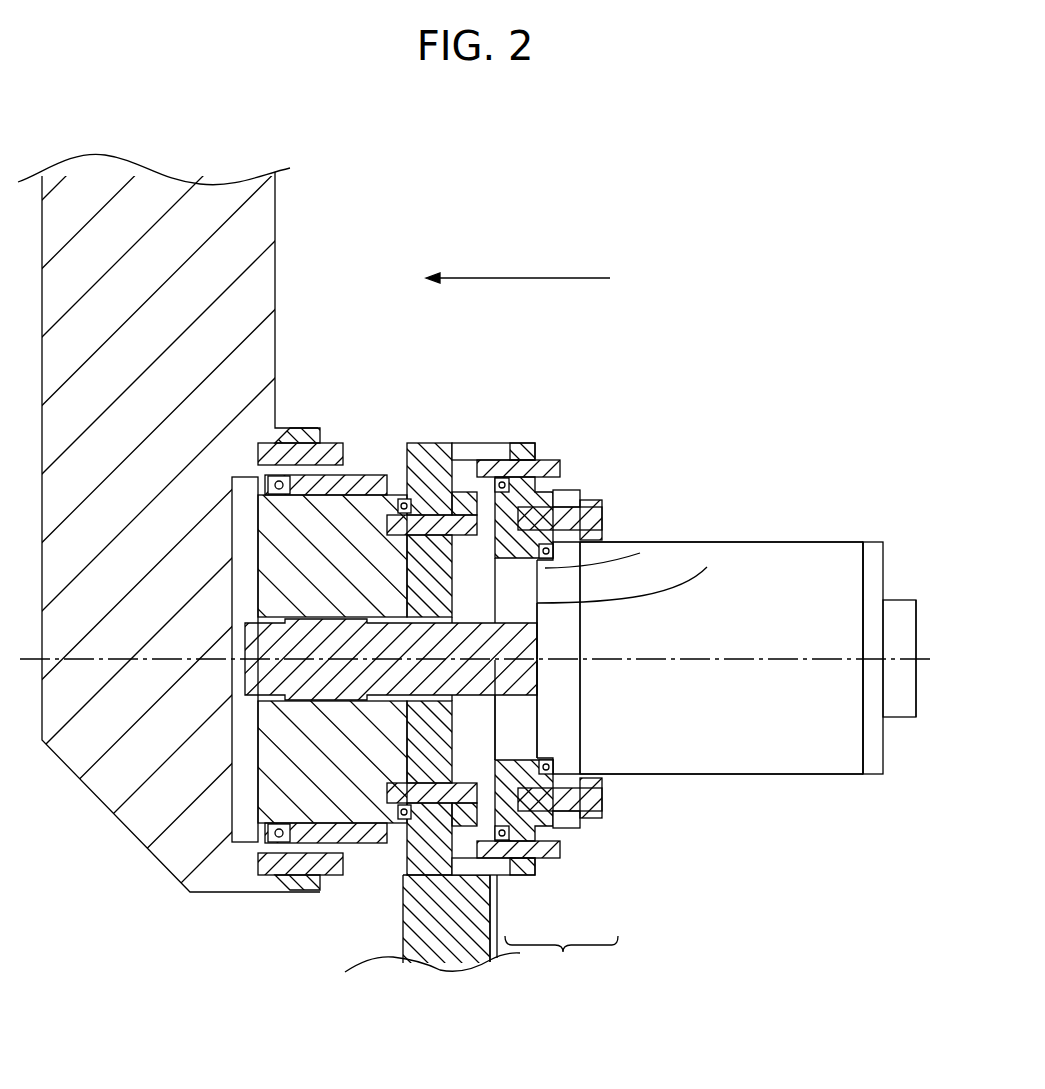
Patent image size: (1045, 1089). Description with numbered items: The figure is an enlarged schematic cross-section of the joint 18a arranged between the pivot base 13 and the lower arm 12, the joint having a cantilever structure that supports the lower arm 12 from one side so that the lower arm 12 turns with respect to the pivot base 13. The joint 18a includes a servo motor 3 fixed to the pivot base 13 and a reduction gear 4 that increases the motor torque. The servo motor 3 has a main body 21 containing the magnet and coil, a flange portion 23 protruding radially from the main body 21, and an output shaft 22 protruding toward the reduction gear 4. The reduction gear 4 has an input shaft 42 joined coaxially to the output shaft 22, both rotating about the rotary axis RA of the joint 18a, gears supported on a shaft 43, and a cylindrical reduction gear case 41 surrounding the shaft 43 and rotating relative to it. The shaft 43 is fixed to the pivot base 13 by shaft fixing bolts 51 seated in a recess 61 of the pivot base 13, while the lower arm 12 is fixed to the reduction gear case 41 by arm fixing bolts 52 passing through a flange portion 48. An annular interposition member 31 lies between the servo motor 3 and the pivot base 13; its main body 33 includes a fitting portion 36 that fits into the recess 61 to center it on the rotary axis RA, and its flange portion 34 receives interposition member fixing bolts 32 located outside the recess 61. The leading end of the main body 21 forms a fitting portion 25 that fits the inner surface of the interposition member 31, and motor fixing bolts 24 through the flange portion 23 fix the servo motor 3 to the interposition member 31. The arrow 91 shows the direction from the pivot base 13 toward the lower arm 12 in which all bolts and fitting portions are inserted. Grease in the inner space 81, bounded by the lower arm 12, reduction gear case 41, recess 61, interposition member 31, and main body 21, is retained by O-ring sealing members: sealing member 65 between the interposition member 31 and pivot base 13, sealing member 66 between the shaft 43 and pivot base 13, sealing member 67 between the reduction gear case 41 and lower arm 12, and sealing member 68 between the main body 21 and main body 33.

The lower arm 12 is at (75, 472).
The pivot base 13 is at (448, 960).
The joint 18a is at (681, 408).
The main body 21 is at (823, 560).
The output shaft 22 is at (537, 667).
The flange portion 23 is at (585, 490).
The motor fixing bolts 24 is at (605, 500).
The fitting portion 25 is at (640, 553).
The servo motor 3 is at (850, 530).
The interposition member 31 is at (527, 443).
The interposition member fixing bolts 32 is at (545, 458).
The main body 33 is at (560, 858).
The flange portion 34 is at (513, 877).
The fitting portion 36 is at (533, 860).
The reduction gear 4 is at (372, 471).
The reduction gear case 41 is at (355, 472).
The input shaft 42 is at (258, 690).
The shaft 43 is at (278, 778).
The flange portion 48 is at (308, 430).
The shaft fixing bolts 51 is at (423, 443).
The arm fixing bolts 52 is at (322, 441).
The recess 61 is at (520, 718).
The sealing member 65 is at (480, 443).
The sealing member 66 is at (403, 498).
The sealing member 67 is at (275, 478).
The sealing member 68 is at (620, 545).
The inner space 81 is at (707, 567).
The arrow 91 is at (530, 278).
The rotary axis RA is at (900, 655).